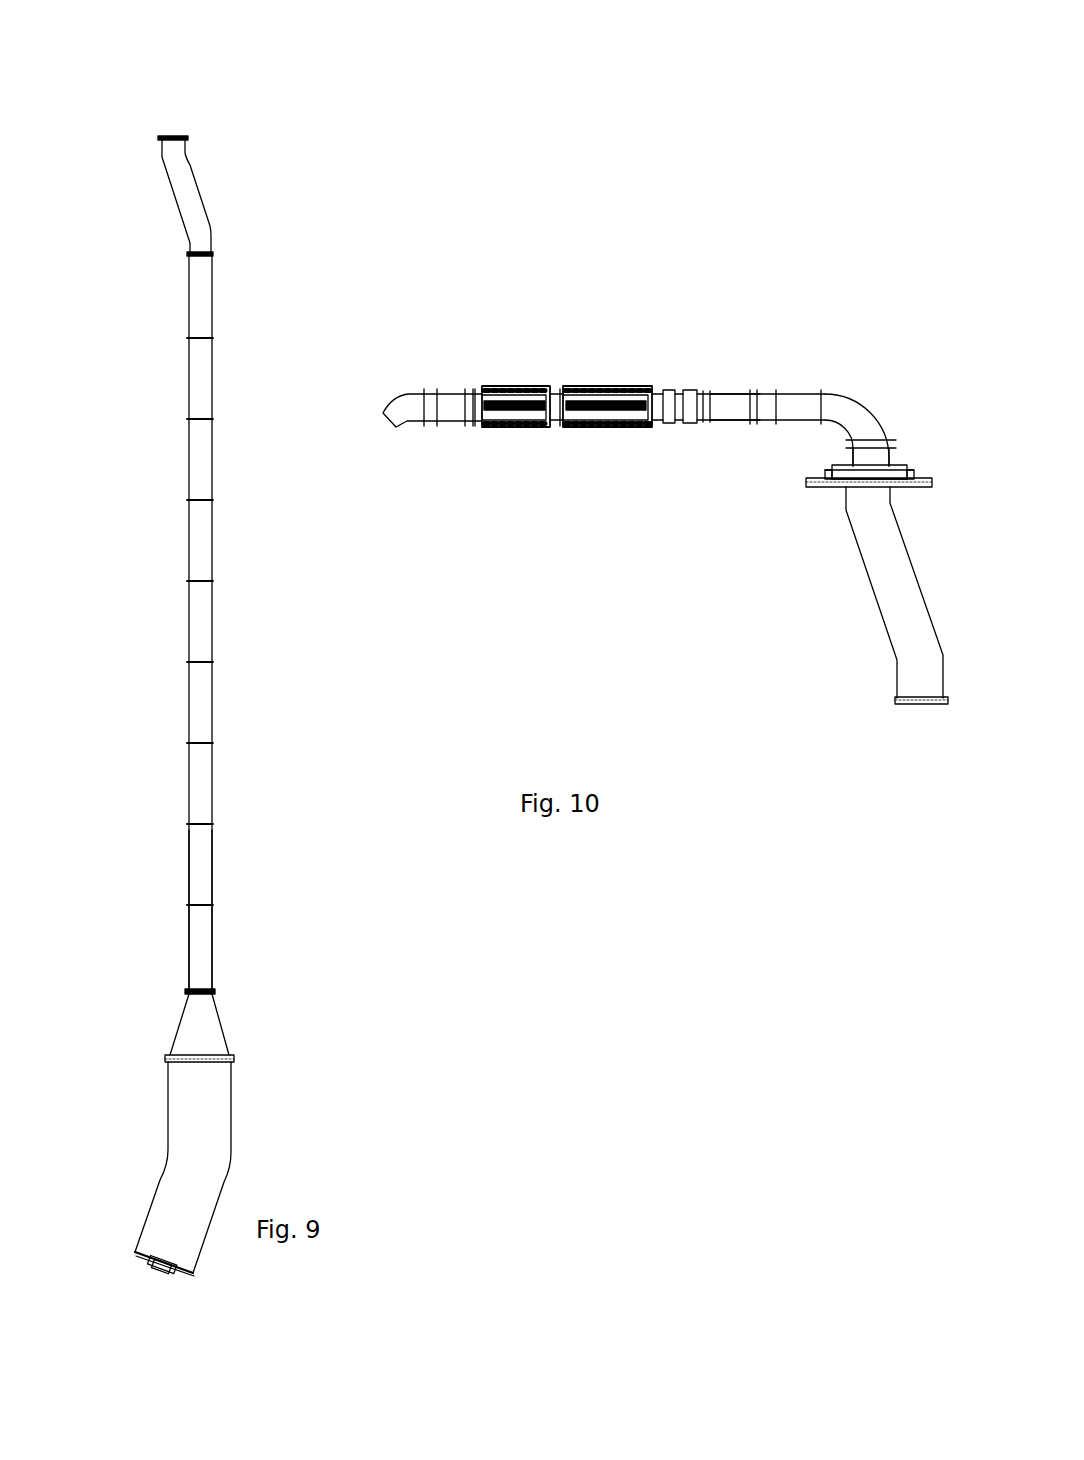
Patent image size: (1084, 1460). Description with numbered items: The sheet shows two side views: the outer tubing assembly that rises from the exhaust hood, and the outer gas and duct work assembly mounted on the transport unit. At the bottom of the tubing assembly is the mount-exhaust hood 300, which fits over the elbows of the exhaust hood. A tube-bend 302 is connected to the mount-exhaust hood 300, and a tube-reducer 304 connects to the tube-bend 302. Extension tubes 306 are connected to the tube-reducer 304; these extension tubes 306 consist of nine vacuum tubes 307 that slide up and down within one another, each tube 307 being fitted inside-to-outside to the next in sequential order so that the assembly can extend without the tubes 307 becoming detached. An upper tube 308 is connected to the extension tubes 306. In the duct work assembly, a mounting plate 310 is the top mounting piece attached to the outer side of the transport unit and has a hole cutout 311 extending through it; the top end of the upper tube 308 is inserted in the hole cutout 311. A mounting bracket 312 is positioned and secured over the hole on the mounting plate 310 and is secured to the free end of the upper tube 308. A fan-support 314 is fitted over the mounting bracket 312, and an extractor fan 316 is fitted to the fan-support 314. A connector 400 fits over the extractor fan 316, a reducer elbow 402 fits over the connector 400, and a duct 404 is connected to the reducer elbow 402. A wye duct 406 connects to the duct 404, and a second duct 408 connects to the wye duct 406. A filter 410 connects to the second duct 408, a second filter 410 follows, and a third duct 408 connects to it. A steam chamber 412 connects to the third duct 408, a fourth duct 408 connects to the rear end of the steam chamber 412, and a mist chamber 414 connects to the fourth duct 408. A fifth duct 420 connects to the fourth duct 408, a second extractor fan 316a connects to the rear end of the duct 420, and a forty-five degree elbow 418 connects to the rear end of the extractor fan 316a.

In FIG. 9, the mount-exhaust hood 300 is at (165, 1272).
In FIG. 9, the tube-bend 302 is at (193, 1130).
In FIG. 9, the tube-reducer 304 is at (173, 1032).
In FIG. 9, the extension tubes 306 is at (198, 950).
In FIG. 9, the vacuum tube 307 is at (194, 704).
In FIG. 9, the upper tube 308 is at (186, 198).
In FIG. 10, the upper tube 308 is at (928, 698).
In FIG. 10, the mounting plate 310 is at (835, 481).
In FIG. 10, the hole cutout 311 is at (870, 475).
In FIG. 10, the mounting bracket 312 is at (822, 486).
In FIG. 10, the fan-support 314 is at (850, 472).
In FIG. 10, the extractor fan 316 is at (843, 476).
In FIG. 10, the extractor fan 316a is at (428, 405).
In FIG. 10, the connector 400 is at (883, 442).
In FIG. 10, the reducer elbow 402 is at (858, 403).
In FIG. 10, the duct 404 is at (800, 402).
In FIG. 10, the wye duct 406 is at (742, 405).
In FIG. 10, the duct 408 is at (472, 405).
In FIG. 10, the filter 410 is at (690, 395).
In FIG. 10, the steam chamber 412 is at (625, 412).
In FIG. 10, the mist chamber 414 is at (508, 412).
In FIG. 10, the 45° elbow 418 is at (403, 410).
In FIG. 10, the fifth duct 420 is at (455, 407).